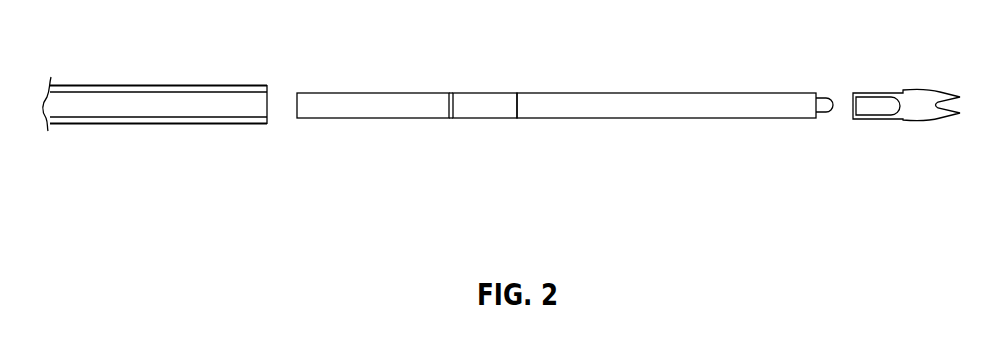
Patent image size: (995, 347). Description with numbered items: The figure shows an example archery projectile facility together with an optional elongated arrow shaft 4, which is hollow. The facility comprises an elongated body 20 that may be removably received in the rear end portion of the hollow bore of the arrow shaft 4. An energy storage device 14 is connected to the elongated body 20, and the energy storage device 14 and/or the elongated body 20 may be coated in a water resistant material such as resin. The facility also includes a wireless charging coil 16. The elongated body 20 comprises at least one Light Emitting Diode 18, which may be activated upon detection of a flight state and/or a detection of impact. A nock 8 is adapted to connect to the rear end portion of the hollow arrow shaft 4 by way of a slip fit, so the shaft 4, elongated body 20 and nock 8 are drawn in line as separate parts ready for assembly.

The elongated arrow shaft 4 is at (180, 122).
The energy storage device 14 is at (377, 92).
The wireless charging coil 16 is at (491, 92).
The elongated body 20 is at (609, 110).
The Light Emitting Diode (LED) 18 is at (820, 95).
The nock 8 is at (910, 90).